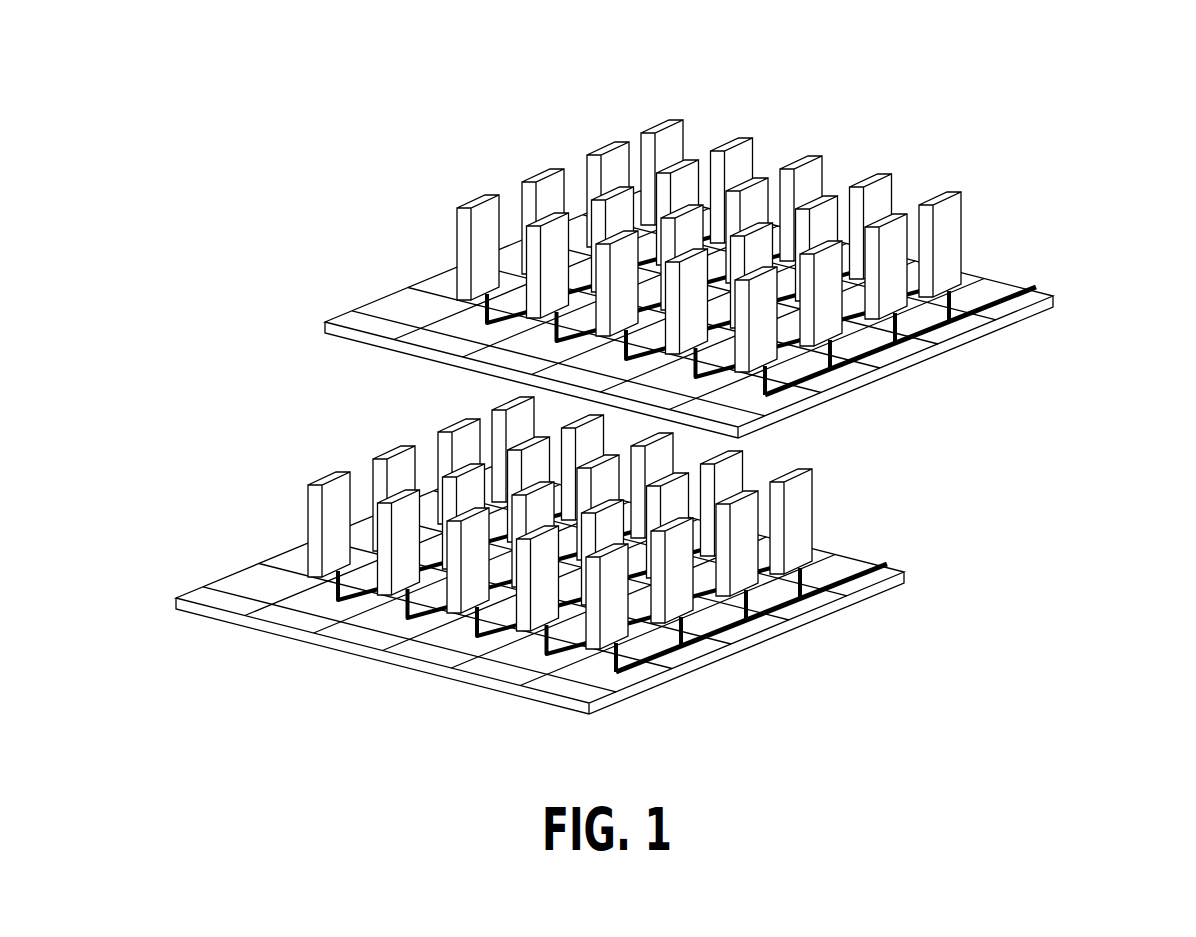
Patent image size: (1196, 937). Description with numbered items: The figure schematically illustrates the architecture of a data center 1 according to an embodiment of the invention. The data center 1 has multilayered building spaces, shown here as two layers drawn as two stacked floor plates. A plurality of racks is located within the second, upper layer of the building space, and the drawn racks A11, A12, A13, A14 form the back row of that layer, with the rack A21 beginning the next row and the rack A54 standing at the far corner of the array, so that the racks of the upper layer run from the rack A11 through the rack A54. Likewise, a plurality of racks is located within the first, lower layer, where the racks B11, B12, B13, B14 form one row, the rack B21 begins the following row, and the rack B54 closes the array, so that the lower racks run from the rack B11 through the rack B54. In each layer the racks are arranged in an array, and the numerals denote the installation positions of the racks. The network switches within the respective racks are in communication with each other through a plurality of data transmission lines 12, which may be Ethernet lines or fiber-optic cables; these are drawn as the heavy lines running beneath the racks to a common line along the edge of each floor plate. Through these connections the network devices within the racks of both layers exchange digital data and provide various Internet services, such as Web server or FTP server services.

The data center 1 is at (676, 370).
The data transmission lines 12 is at (999, 297).
The rack A11 is at (477, 203).
The rack A12 is at (538, 176).
The rack A13 is at (603, 149).
The rack A14 is at (654, 128).
The rack A21 is at (536, 266).
The rack A54 is at (948, 195).
The rack B11 is at (323, 483).
The rack B12 is at (387, 457).
The rack B13 is at (450, 428).
The rack B14 is at (506, 405).
The rack B21 is at (386, 542).
The rack B54 is at (799, 473).